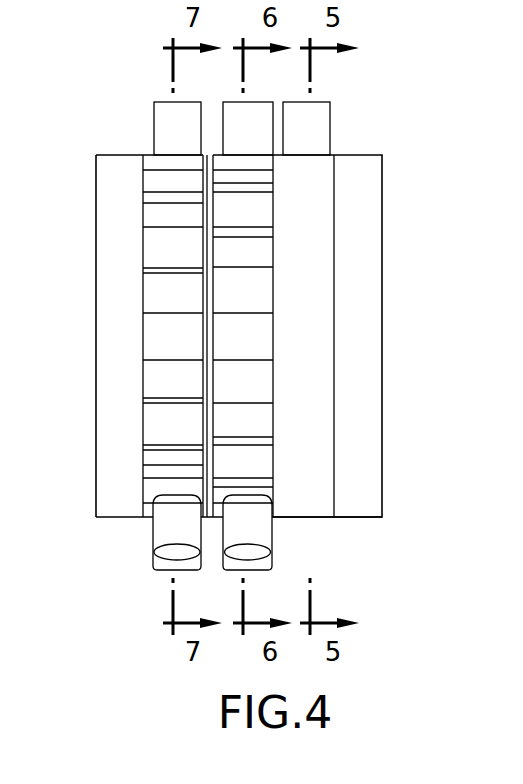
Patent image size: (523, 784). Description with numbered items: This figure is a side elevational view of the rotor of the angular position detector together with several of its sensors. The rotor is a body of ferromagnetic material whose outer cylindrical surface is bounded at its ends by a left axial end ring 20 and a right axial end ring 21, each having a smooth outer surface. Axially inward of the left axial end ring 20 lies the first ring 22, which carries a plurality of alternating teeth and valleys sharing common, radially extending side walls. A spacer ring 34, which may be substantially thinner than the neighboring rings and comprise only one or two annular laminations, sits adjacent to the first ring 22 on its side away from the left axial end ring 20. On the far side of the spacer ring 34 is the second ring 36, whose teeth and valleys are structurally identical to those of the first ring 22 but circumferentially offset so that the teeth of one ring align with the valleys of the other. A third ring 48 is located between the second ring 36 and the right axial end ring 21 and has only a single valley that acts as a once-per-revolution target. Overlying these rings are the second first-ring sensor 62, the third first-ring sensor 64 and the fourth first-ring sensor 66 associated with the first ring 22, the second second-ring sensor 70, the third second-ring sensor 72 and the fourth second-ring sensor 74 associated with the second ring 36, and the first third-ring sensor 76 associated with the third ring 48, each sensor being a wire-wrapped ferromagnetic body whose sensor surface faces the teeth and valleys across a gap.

The left axial end ring 20 is at (115, 452).
The right axial end ring 21 is at (370, 467).
The first ring 22 is at (140, 337).
The spacer ring 34 is at (207, 505).
The second ring 36 is at (273, 296).
The third ring 48 is at (352, 538).
The second first-ring sensor 62 is at (158, 530).
The third first-ring sensor 64 is at (153, 142).
The fourth first-ring sensor 66 is at (153, 560).
The second second-ring sensor 70 is at (263, 525).
The third second-ring sensor 72 is at (267, 113).
The fourth second-ring sensor 74 is at (258, 568).
The first third-ring sensor 76 is at (328, 143).